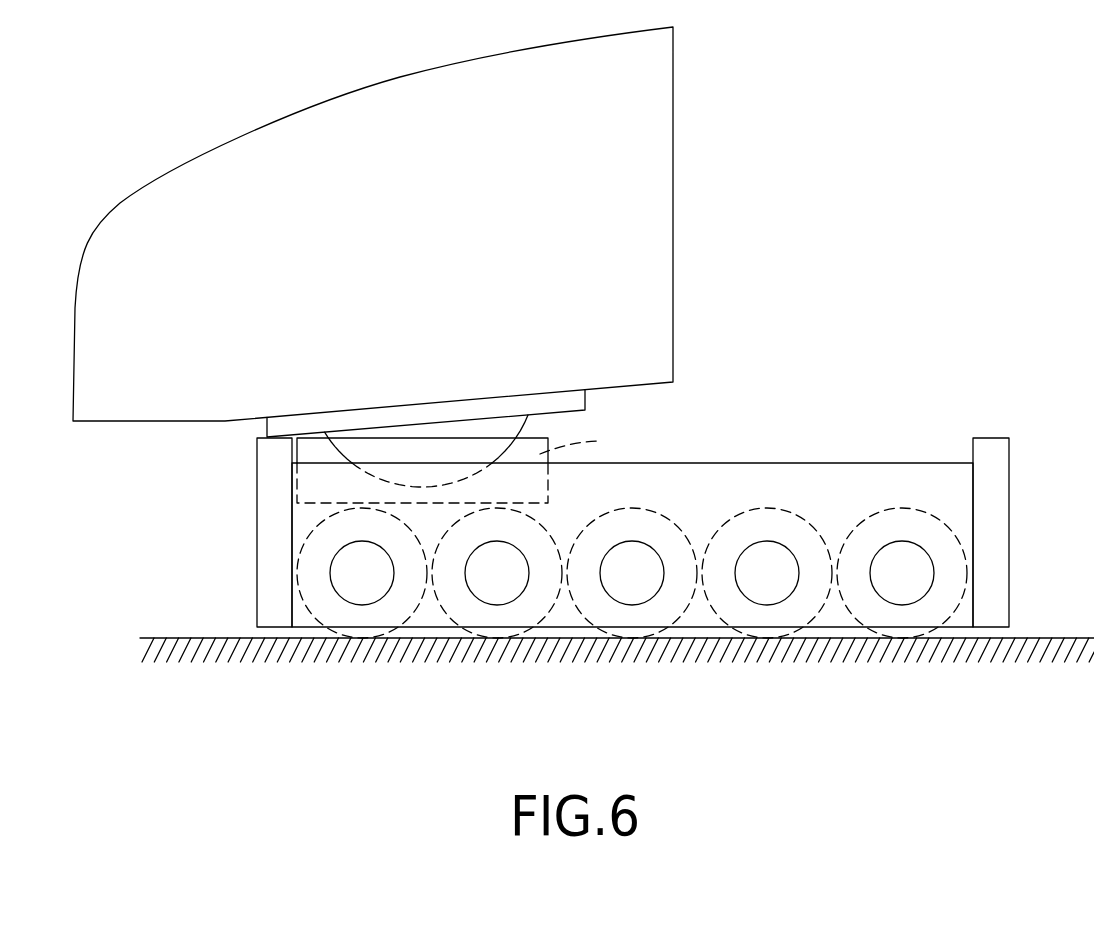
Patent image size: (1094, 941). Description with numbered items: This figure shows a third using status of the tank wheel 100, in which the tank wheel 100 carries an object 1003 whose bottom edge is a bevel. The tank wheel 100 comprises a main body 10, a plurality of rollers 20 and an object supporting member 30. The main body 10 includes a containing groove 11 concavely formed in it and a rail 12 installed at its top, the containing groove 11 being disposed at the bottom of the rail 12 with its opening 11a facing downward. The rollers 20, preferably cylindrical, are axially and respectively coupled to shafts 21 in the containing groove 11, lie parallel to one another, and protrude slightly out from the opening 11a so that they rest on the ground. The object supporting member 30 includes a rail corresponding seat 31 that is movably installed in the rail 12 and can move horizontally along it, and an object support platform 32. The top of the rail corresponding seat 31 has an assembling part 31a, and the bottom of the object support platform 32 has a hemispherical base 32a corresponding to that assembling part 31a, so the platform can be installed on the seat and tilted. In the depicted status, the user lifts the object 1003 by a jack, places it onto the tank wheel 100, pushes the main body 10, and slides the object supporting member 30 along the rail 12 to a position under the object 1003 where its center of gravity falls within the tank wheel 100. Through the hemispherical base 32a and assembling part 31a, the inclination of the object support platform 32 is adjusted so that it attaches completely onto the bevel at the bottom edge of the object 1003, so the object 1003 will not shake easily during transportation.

The object 1003 is at (655, 207).
The tank wheel 100 is at (882, 344).
The object supporting member 30 is at (545, 415).
The object support platform 32 is at (575, 400).
The rail corresponding seat 31 is at (548, 453).
The hemispherical base 32a is at (528, 415).
The assembling part 31a is at (398, 485).
The rail 12 is at (903, 463).
The main body 10 is at (1002, 517).
The containing groove 11 is at (965, 603).
The opening 11a is at (973, 627).
The rollers 20 is at (903, 633).
The shafts 21 is at (887, 583).